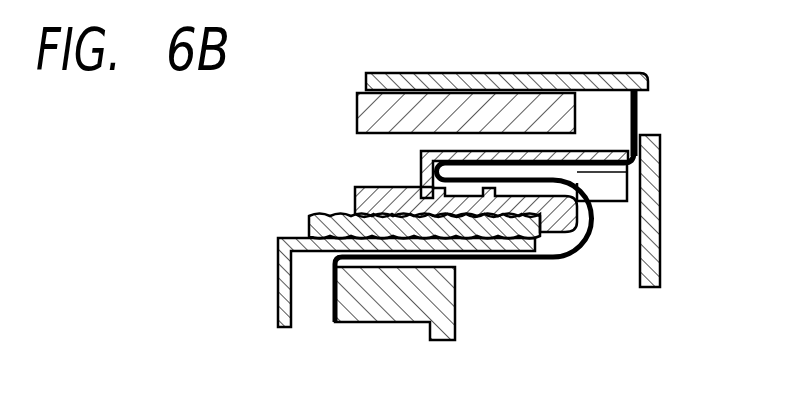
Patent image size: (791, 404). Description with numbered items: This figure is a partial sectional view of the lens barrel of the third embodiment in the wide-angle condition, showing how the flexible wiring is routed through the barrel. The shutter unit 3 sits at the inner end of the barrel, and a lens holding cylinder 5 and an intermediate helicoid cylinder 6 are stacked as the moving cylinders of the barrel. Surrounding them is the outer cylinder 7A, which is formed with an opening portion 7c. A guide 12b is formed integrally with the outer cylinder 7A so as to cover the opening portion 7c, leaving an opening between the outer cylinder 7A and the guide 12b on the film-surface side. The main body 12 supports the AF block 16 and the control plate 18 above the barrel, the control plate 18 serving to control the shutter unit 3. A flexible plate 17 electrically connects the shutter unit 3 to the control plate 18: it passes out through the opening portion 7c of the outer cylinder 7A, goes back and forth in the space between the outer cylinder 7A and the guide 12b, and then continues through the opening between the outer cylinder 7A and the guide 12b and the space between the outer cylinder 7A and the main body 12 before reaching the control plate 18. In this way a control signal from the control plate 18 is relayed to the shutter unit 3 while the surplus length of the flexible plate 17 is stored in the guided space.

The shutter unit 3 is at (402, 318).
The lens holding cylinder 5 is at (280, 300).
The intermediate helicoid cylinder 6 is at (310, 220).
The outer cylinder 7A is at (355, 197).
The opening portion 7c is at (607, 190).
The main body 12 is at (655, 220).
The guide 12b is at (613, 152).
The AF block 16 is at (357, 110).
The flexible plate 17 is at (530, 259).
The control plate 18 is at (648, 80).